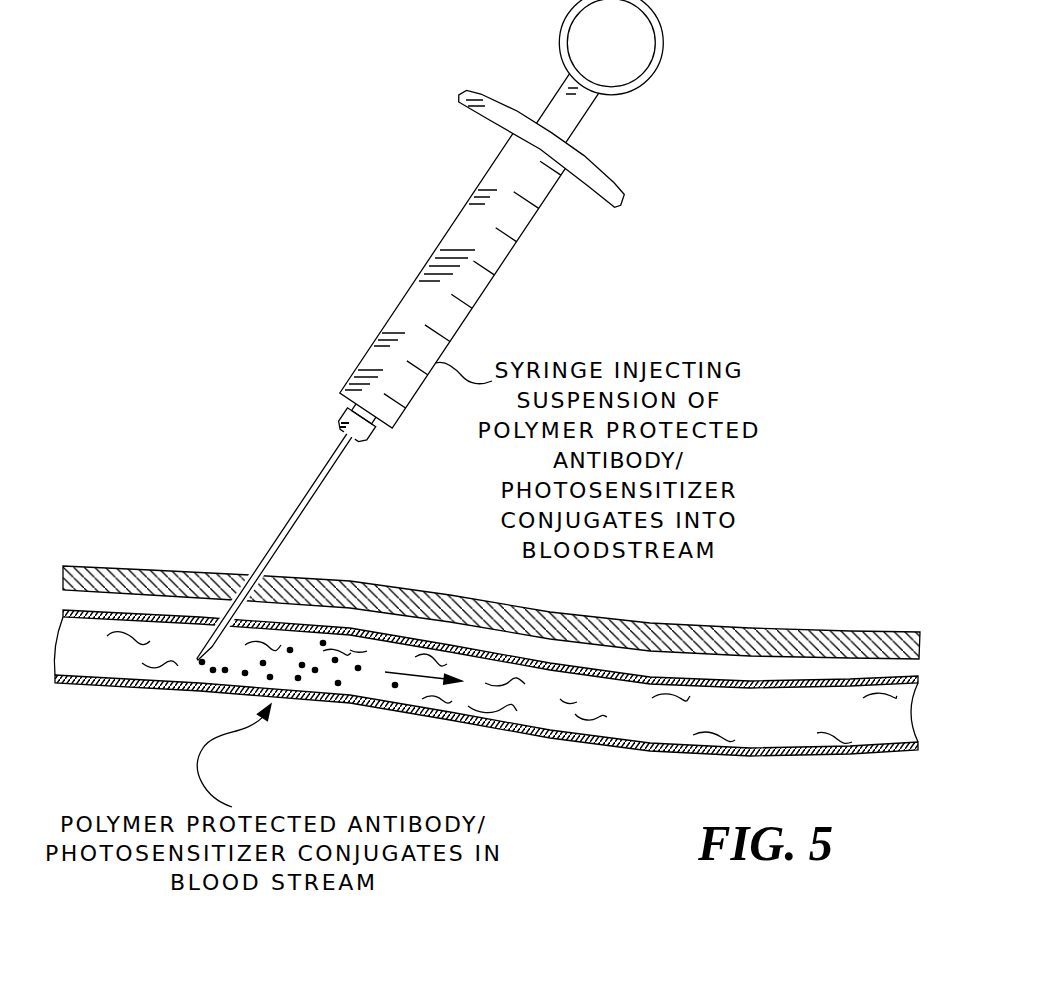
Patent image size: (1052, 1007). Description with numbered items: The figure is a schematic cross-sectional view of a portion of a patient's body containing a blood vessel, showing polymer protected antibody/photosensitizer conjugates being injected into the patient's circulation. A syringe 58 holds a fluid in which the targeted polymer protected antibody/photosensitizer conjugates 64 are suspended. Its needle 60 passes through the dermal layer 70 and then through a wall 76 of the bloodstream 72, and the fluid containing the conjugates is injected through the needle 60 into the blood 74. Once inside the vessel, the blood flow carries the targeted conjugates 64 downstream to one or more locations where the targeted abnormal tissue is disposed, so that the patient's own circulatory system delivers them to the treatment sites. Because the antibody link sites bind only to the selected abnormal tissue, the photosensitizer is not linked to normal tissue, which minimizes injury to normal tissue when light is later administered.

The syringe 58 is at (400, 303).
The needle 60 is at (321, 483).
The polymer protected antibody/photosensitizer conjugates 64 is at (211, 671).
The dermal layer 70 is at (628, 618).
The bloodstream 72 is at (477, 739).
The blood 74 is at (577, 729).
The wall 76 is at (657, 746).